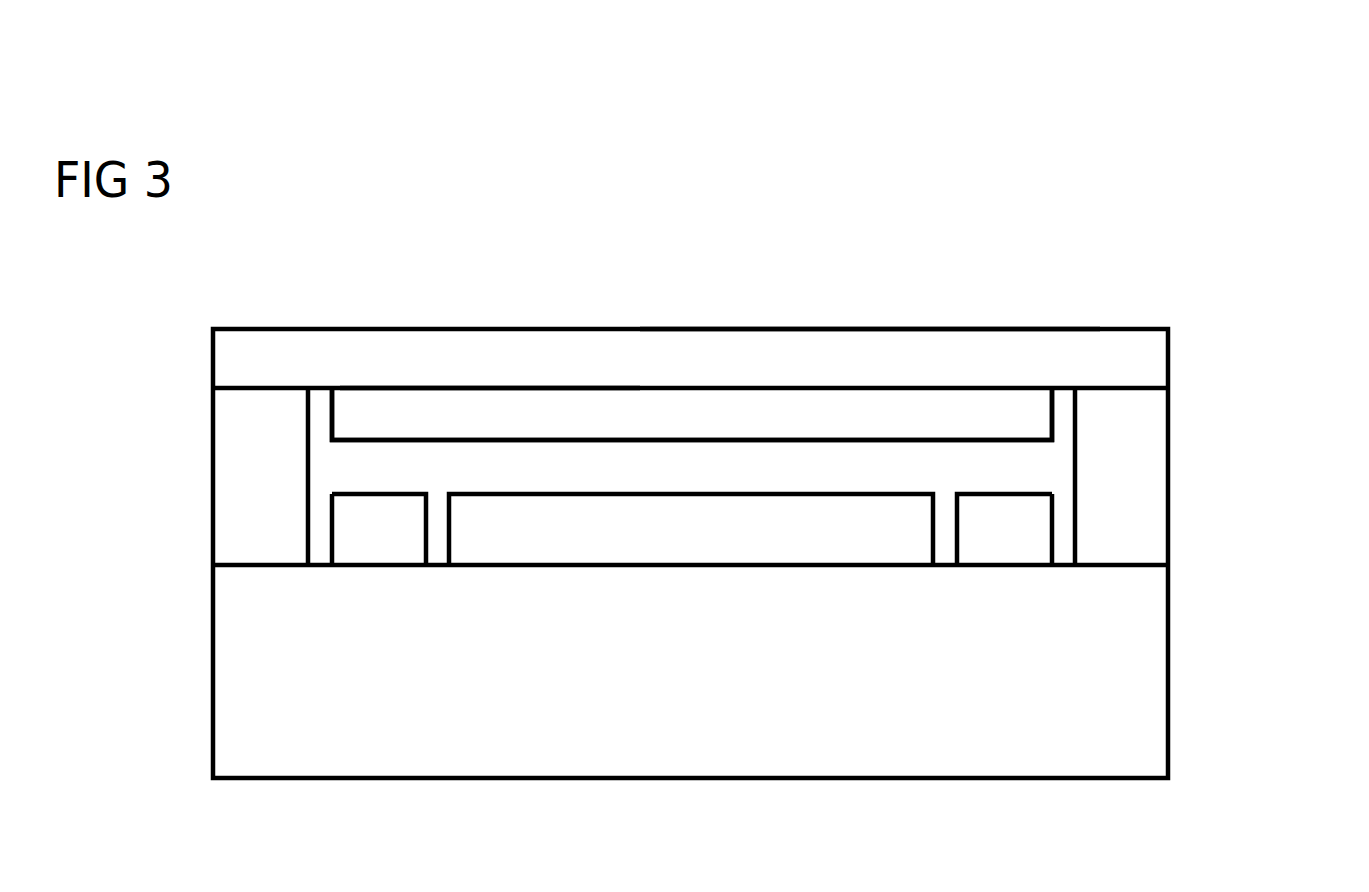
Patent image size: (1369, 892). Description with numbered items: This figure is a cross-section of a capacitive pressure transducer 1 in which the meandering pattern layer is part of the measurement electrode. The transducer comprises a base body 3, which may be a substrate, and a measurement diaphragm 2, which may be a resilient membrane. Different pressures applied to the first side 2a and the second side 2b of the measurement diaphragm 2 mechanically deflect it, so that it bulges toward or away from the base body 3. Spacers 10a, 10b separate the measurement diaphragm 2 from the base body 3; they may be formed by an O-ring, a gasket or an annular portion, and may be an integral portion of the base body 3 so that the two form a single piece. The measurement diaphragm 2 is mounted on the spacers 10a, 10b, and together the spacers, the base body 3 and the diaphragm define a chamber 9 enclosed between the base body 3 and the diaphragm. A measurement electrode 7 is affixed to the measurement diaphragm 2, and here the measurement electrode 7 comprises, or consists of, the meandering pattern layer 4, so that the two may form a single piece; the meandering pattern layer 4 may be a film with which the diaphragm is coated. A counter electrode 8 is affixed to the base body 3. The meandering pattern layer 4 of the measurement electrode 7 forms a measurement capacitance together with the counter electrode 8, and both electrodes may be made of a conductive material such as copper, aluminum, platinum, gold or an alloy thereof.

The capacitive pressure transducer 1 is at (1205, 248).
The measurement diaphragm 2 is at (690, 364).
The first side of the measurement diaphragm 2a is at (902, 306).
The second side of the measurement diaphragm 2b is at (377, 364).
The base body 3 is at (690, 635).
The meandering pattern layer 4 is at (692, 414).
The measurement electrode 7 is at (692, 414).
The counter electrode 8 is at (692, 529).
The chamber 9 is at (692, 505).
The spacer 10a is at (268, 476).
The spacer 10b is at (1115, 476).